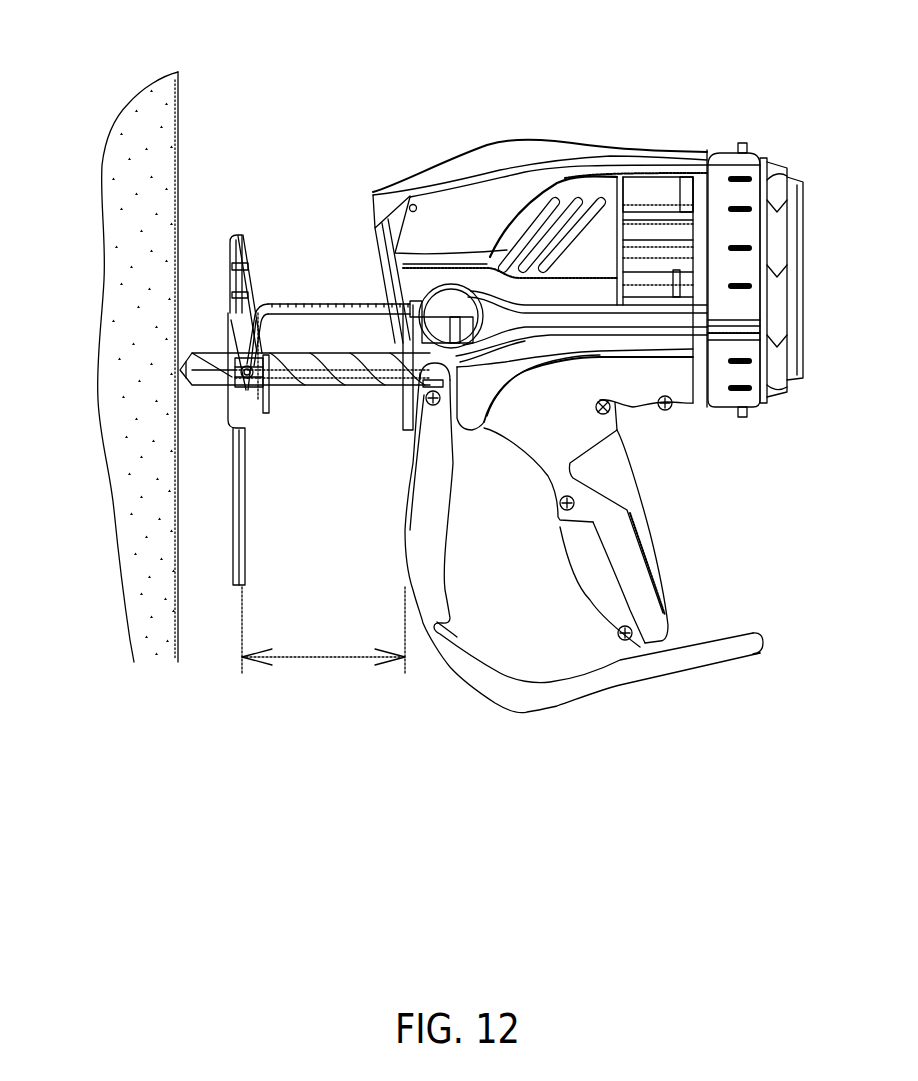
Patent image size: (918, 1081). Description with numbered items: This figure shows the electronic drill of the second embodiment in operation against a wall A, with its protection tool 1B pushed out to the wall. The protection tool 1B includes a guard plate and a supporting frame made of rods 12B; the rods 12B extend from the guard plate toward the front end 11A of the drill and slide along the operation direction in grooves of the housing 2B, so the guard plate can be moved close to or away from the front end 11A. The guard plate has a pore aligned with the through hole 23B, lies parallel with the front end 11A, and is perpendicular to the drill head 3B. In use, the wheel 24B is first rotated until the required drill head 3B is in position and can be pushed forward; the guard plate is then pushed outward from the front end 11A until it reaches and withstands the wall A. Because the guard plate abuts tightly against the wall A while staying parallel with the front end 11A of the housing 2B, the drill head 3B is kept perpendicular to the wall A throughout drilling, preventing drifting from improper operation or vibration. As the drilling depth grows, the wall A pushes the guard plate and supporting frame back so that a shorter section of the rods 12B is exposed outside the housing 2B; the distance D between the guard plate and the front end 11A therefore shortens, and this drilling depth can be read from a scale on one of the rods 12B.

The wall A is at (148, 102).
The protection tool 1B is at (247, 233).
The rod 12B is at (293, 302).
The drill head 3B is at (318, 353).
The through hole 23B is at (403, 367).
The front end 11A is at (423, 282).
The housing 2B is at (560, 140).
The wheel 24B is at (717, 173).
The distance D is at (323, 630).